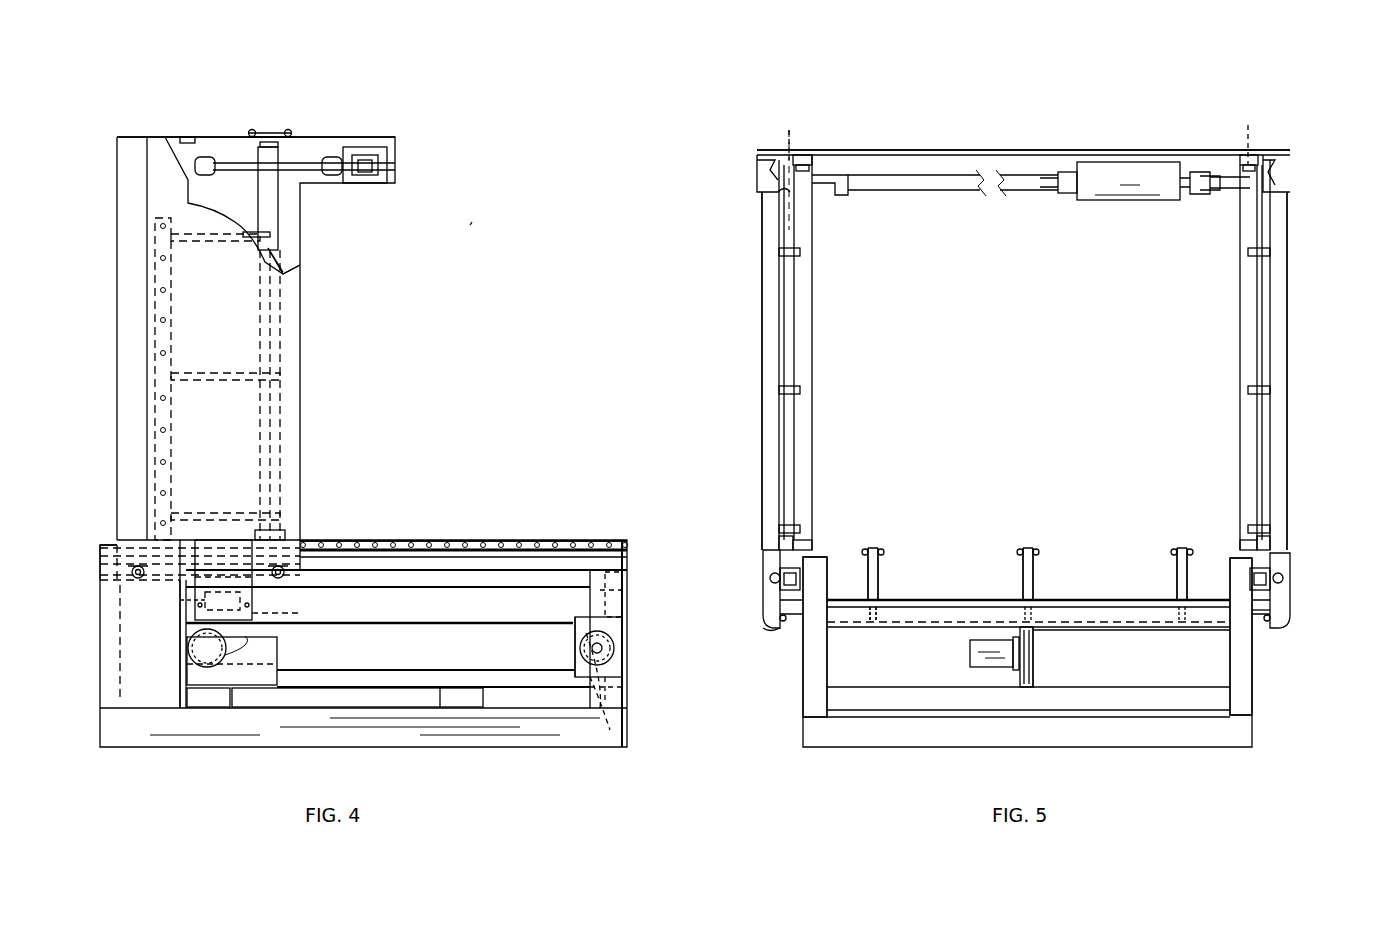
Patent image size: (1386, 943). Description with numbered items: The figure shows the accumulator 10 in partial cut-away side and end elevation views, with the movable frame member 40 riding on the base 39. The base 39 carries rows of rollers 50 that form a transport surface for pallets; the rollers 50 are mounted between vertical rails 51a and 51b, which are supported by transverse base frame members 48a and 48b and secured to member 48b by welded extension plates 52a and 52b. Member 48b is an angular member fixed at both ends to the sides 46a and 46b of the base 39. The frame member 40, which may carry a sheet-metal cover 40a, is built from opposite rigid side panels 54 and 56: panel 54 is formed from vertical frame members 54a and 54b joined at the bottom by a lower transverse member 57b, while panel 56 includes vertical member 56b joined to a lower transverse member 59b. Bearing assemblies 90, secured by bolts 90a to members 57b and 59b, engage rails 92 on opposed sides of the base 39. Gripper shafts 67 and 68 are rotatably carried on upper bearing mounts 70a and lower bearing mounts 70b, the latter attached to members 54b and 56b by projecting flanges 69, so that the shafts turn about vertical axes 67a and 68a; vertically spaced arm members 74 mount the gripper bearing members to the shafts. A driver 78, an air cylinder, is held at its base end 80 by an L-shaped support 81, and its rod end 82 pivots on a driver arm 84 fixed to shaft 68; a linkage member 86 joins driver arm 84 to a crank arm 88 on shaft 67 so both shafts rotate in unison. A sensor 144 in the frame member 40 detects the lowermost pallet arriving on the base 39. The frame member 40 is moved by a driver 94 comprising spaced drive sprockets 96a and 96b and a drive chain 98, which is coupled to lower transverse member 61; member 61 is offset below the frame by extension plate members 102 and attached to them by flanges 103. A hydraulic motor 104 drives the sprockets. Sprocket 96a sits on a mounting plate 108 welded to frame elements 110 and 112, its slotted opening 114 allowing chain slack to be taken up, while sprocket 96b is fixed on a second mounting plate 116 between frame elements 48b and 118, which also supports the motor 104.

In FIG. 4, the accumulator 10 is at (470, 232).
In FIG. 5, the accumulator 10 is at (1030, 88).
In FIG. 4, the base 39 is at (518, 522).
In FIG. 5, the base 39 is at (1262, 712).
In FIG. 4, the frame member 40 is at (263, 115).
In FIG. 4, the cover 40a is at (165, 137).
In FIG. 4, the side of base 46a is at (560, 570).
In FIG. 5, the side of base 46a is at (797, 690).
In FIG. 5, the side of base 46b is at (1262, 686).
In FIG. 4, the transverse base frame member 48a is at (253, 598).
In FIG. 4, the transverse base frame member 48b is at (630, 594).
In FIG. 5, the transverse base frame member 48b is at (1065, 612).
In FIG. 4, the rollers 50 is at (345, 540).
In FIG. 5, the rollers 50 is at (873, 548).
In FIG. 4, the vertical rail 51a is at (410, 540).
In FIG. 5, the vertical rail 51a is at (866, 568).
In FIG. 4, the vertical rail 51b is at (470, 540).
In FIG. 5, the vertical rail 51b is at (880, 568).
In FIG. 5, the extension plate 52a is at (866, 603).
In FIG. 5, the extension plate 52b is at (882, 603).
In FIG. 4, the side panel 54 is at (300, 352).
In FIG. 5, the side panel 54 is at (745, 242).
In FIG. 4, the vertical frame member 54a is at (118, 207).
In FIG. 4, the vertical frame member 54b is at (293, 265).
In FIG. 5, the vertical frame member 54b is at (762, 352).
In FIG. 5, the side panel 56 is at (1298, 270).
In FIG. 4, the vertical frame member 56b is at (290, 235).
In FIG. 5, the vertical frame member 56b is at (1287, 478).
In FIG. 4, the lower transverse member 57b is at (110, 540).
In FIG. 5, the lower transverse member 57b is at (765, 560).
In FIG. 5, the lower transverse member 59b is at (1285, 560).
In FIG. 4, the lower transverse member 61 is at (190, 605).
In FIG. 5, the lower transverse member 61 is at (1258, 632).
In FIG. 5, the shaft 67 is at (1240, 305).
In FIG. 5, the vertical axis 67a is at (1252, 127).
In FIG. 4, the shaft 68 is at (278, 207).
In FIG. 5, the shaft 68 is at (812, 302).
In FIG. 5, the vertical axis 68a is at (810, 132).
In FIG. 5, the projecting flange 69 is at (790, 540).
In FIG. 4, the bearing mount 70a is at (282, 142).
In FIG. 5, the bearing mount 70a is at (812, 160).
In FIG. 5, the bearing mount 70b is at (815, 545).
In FIG. 5, the arm members 74 is at (800, 252).
In FIG. 5, the driver 78 is at (1113, 165).
In FIG. 5, the base end 80 is at (1072, 170).
In FIG. 5, the L-shaped support 81 is at (1048, 172).
In FIG. 5, the rod end 82 is at (1202, 172).
In FIG. 5, the driver arm 84 is at (1215, 190).
In FIG. 5, the linkage member 86 is at (932, 175).
In FIG. 5, the crank arm 88 is at (832, 172).
In FIG. 4, the bearing assemblies 90 is at (130, 578).
In FIG. 5, the bearing assemblies 90 is at (780, 590).
In FIG. 5, the bolt 90a is at (770, 578).
In FIG. 4, the rails 92 is at (375, 567).
In FIG. 5, the rails 92 is at (785, 633).
In FIG. 4, the driver 94 is at (480, 620).
In FIG. 4, the drive sprocket 96a is at (265, 648).
In FIG. 4, the drive sprocket 96b is at (575, 630).
In FIG. 5, the drive sprocket 96b is at (1035, 650).
In FIG. 4, the drive chain 98 is at (490, 672).
In FIG. 5, the drive chain 98 is at (1050, 630).
In FIG. 4, the extension plate members 102 is at (205, 596).
In FIG. 5, the extension plate members 102 is at (1275, 605).
In FIG. 4, the flanges 103 is at (270, 612).
In FIG. 5, the flanges 103 is at (800, 620).
In FIG. 5, the motor 104 is at (968, 652).
In FIG. 4, the mounting plate 108 is at (262, 680).
In FIG. 4, the frame element 110 is at (193, 708).
In FIG. 4, the frame element 112 is at (180, 670).
In FIG. 4, the slotted opening 114 is at (228, 640).
In FIG. 4, the mounting plate 116 is at (578, 680).
In FIG. 5, the mounting plate 116 is at (1035, 682).
In FIG. 4, the frame element 118 is at (622, 728).
In FIG. 5, the frame element 118 is at (1128, 692).
In FIG. 4, the sensor 144 is at (200, 137).